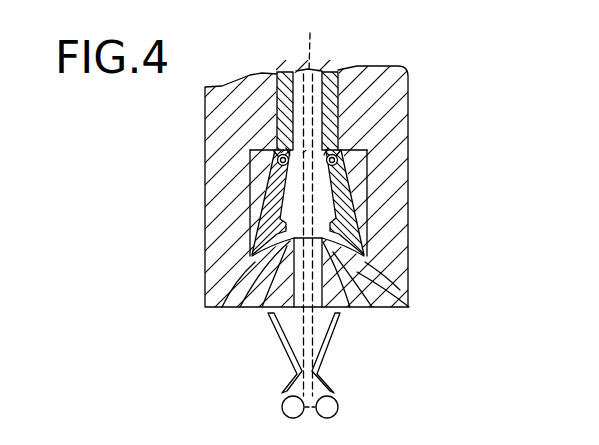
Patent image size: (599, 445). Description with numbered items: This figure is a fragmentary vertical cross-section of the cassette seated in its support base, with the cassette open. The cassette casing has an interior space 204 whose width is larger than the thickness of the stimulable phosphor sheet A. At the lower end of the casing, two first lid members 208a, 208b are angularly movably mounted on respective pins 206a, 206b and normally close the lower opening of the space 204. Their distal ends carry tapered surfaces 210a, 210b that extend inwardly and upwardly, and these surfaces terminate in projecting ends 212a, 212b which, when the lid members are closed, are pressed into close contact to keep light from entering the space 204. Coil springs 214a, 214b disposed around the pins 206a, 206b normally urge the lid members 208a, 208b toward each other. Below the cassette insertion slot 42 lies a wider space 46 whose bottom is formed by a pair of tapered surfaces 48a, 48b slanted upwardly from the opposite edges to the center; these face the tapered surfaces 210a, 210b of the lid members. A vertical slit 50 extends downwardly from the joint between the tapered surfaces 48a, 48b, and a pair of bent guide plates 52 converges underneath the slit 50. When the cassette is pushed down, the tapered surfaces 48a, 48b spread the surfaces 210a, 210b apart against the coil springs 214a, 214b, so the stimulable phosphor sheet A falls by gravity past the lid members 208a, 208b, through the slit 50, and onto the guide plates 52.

The cassette insertion slot 42 is at (358, 66).
The space 46 is at (358, 174).
The tapered surface 48a is at (262, 290).
The tapered surface 48b is at (357, 278).
The vertical slit 50 is at (343, 295).
The bent guide plates 52 is at (286, 362).
The space 204 is at (280, 76).
The pin 206a is at (278, 159).
The pin 206b is at (346, 160).
The first lid member 208a is at (263, 207).
The first lid member 208b is at (370, 260).
The tapered surface 210a is at (245, 288).
The tapered surface 210b is at (408, 307).
The projecting end 212a is at (275, 233).
The projecting end 212b is at (352, 212).
The coil spring 214a is at (270, 150).
The coil spring 214b is at (338, 132).
The stimulable phosphor sheet A is at (305, 41).